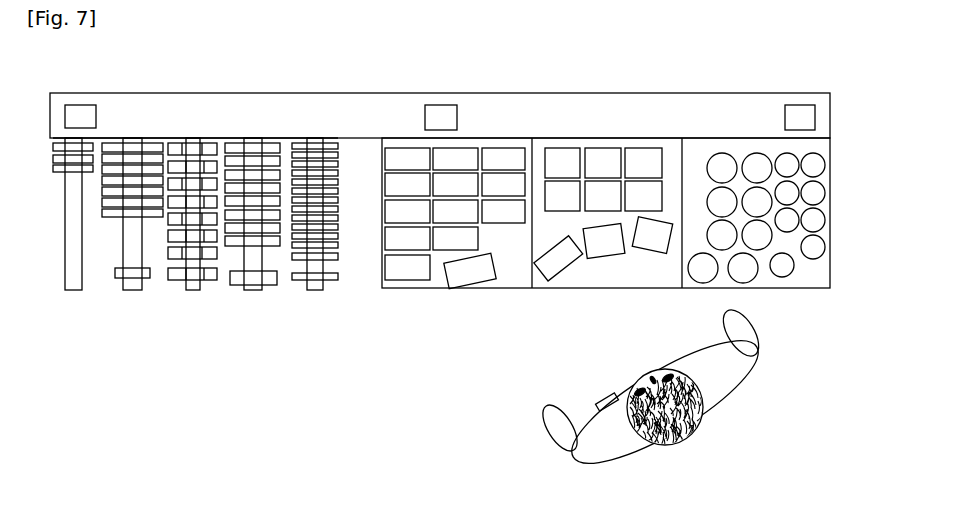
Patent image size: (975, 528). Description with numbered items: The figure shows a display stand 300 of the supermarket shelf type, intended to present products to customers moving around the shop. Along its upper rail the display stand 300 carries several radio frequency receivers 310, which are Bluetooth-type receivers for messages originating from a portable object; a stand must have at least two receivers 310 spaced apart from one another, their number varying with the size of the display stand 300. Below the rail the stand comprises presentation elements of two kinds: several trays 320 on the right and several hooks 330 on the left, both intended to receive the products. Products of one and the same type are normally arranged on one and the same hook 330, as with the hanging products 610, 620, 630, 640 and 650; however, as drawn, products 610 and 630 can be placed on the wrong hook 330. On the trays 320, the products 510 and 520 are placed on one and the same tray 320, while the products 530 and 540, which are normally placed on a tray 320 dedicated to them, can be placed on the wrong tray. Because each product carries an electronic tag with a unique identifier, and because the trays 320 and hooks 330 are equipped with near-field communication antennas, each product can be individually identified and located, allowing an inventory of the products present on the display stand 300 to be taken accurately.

The display stand 300 is at (832, 128).
The radio frequency receiver 310 is at (80, 105).
The tray 320 is at (410, 290).
The hook 330 is at (193, 291).
The product 510 is at (794, 268).
The product 520 is at (734, 289).
The product 530 is at (647, 252).
The product 540 is at (528, 264).
The product 610 is at (58, 172).
The product 620 is at (118, 218).
The product 630 is at (172, 276).
The product 640 is at (232, 280).
The product 650 is at (337, 262).